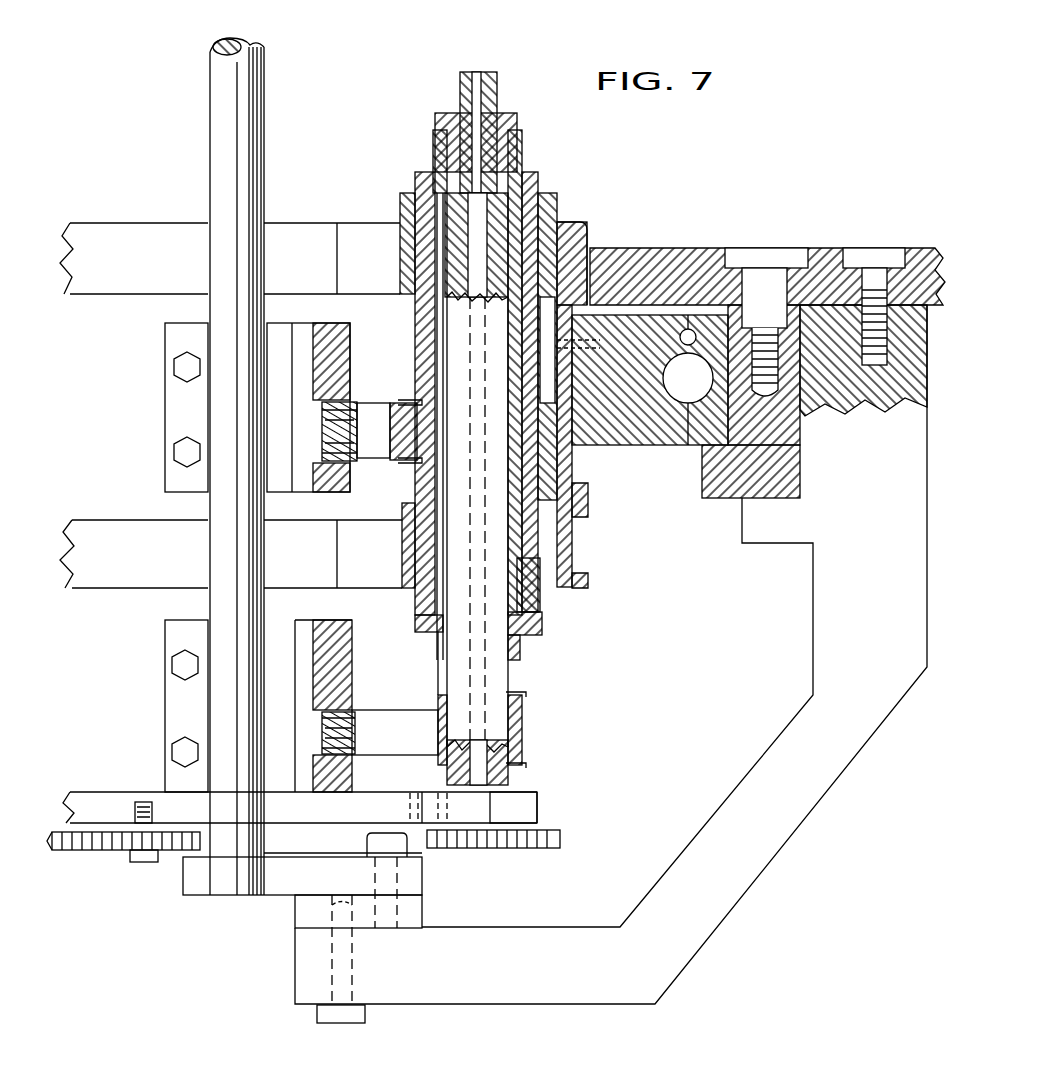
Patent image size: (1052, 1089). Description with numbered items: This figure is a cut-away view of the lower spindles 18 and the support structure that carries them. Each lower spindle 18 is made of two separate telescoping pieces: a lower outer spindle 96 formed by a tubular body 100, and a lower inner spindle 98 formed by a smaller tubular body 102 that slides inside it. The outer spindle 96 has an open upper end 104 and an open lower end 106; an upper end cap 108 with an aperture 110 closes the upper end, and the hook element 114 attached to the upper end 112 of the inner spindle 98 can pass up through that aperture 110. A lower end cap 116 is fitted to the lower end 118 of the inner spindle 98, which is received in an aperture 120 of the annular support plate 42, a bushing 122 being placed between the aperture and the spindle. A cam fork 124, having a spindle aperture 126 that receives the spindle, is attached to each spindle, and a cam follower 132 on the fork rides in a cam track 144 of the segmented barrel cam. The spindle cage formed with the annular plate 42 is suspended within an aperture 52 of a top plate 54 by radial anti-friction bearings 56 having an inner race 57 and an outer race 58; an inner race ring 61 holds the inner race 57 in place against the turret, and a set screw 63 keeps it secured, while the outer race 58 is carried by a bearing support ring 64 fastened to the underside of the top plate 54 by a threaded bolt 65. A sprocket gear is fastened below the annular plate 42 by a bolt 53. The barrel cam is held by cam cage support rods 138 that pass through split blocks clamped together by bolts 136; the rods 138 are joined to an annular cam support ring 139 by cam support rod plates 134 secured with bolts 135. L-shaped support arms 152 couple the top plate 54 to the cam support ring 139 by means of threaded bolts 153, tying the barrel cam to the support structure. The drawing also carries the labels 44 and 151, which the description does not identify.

The lower spindles 18 is at (555, 674).
The annular support plate 42 is at (123, 792).
The bearing block 44 is at (418, 790).
The aperture 52 is at (591, 248).
The bolt 53 is at (145, 860).
The top plate 54 is at (650, 248).
The radial anti-friction bearings 56 is at (675, 387).
The inner race 57 is at (640, 450).
The outer race 58 is at (698, 438).
The inner race ring 61 is at (580, 452).
The set screw 63 is at (598, 300).
The bearing support ring 64 is at (788, 500).
The threaded bolt 65 is at (765, 255).
The lower outer spindle 96 is at (538, 642).
The lower inner spindle 98 is at (430, 674).
The tubular body 100 is at (518, 148).
The tubular body 102 is at (445, 656).
The open upper end 104 is at (517, 117).
The open lower end 106 is at (522, 662).
The upper end cap 108 is at (497, 95).
The aperture 110 is at (478, 72).
The upper end 112 is at (435, 145).
The hook element 114 is at (460, 78).
The lower end cap 116 is at (540, 803).
The lower end 118 is at (510, 776).
The apertures 120 is at (495, 808).
The bushing 122 is at (548, 588).
The cam fork 124 is at (410, 400).
The spindle aperture 126 is at (518, 702).
The cam follower 132 is at (338, 430).
The cam support rod plates 134 is at (412, 876).
The bolts 135 is at (365, 841).
The bolt 136 is at (187, 743).
The cam cage support rod 138 is at (215, 106).
The annular cam support ring 139 is at (410, 912).
The cam track 144 is at (340, 712).
The gear 151 is at (522, 848).
The support arms 152 is at (712, 925).
The threaded bolts 153 is at (872, 255).